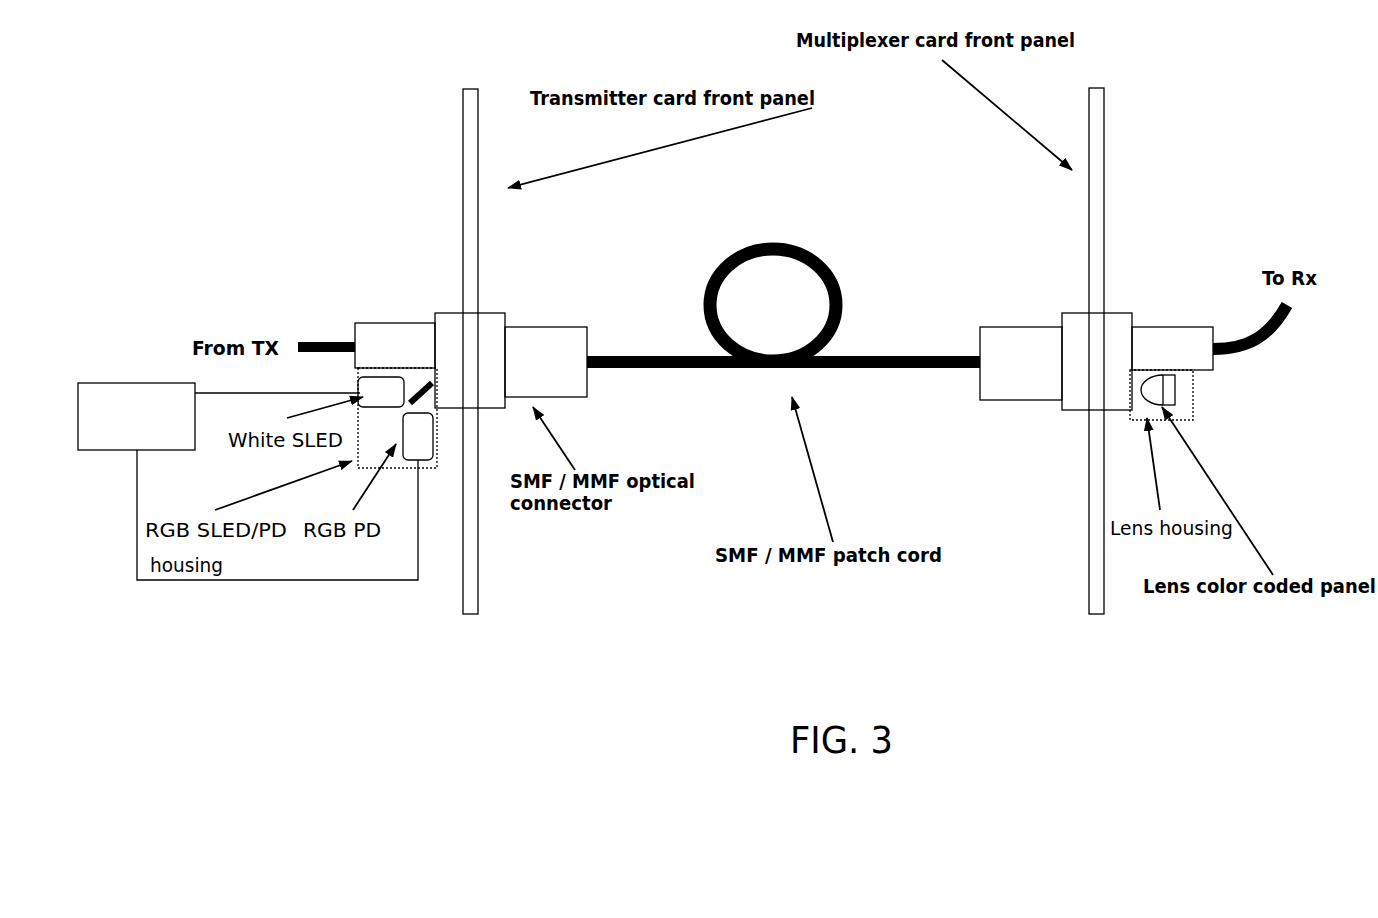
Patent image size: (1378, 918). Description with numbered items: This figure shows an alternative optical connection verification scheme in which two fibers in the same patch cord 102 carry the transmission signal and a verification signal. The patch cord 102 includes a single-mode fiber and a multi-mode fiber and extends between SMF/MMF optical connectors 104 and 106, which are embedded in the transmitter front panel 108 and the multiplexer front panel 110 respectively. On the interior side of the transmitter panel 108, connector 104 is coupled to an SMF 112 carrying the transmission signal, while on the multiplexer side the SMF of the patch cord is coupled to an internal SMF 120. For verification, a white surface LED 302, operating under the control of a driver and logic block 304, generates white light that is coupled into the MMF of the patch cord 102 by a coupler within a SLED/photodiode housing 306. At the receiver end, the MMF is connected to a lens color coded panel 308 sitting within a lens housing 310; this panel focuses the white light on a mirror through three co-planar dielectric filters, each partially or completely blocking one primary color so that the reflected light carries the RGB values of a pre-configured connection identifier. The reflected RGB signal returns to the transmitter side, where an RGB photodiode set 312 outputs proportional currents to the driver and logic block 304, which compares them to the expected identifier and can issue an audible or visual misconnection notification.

The patch cord 102 is at (840, 356).
The SMF/MMF optical connector 104 is at (492, 318).
The SMF/MMF optical connector 106 is at (1070, 318).
The transmitter front panel 108 is at (472, 138).
The multiplexer front panel 110 is at (1098, 127).
The SMF 112 is at (316, 340).
The internal SMF 120 is at (1278, 328).
The white surface LED 302 is at (362, 378).
The driver and logic block 304 is at (100, 395).
The SLED/photodiode housing 306 is at (437, 463).
The lens color coded panel 308 is at (1177, 393).
The lens housing 310 is at (1183, 378).
The RGB photodiode set 312 is at (408, 443).